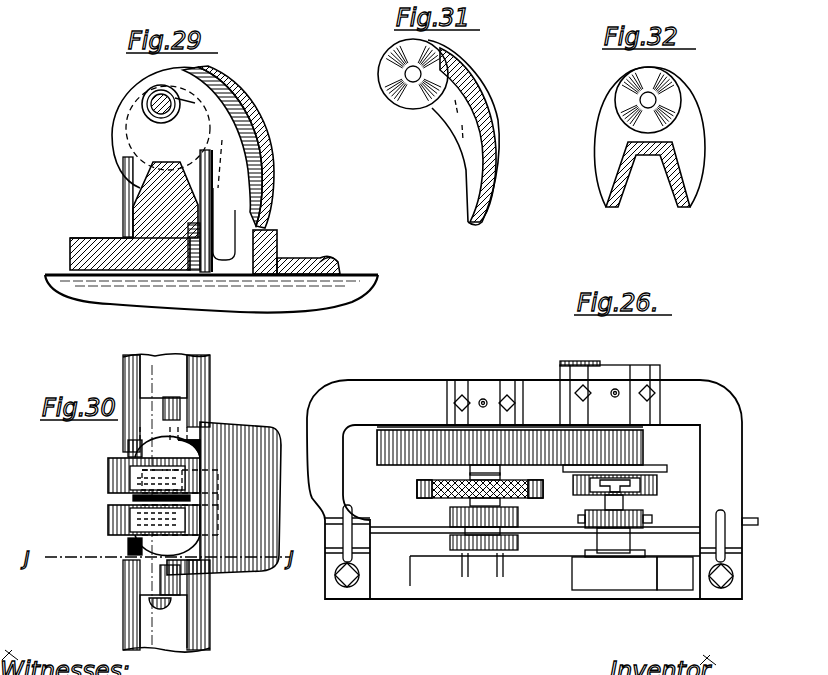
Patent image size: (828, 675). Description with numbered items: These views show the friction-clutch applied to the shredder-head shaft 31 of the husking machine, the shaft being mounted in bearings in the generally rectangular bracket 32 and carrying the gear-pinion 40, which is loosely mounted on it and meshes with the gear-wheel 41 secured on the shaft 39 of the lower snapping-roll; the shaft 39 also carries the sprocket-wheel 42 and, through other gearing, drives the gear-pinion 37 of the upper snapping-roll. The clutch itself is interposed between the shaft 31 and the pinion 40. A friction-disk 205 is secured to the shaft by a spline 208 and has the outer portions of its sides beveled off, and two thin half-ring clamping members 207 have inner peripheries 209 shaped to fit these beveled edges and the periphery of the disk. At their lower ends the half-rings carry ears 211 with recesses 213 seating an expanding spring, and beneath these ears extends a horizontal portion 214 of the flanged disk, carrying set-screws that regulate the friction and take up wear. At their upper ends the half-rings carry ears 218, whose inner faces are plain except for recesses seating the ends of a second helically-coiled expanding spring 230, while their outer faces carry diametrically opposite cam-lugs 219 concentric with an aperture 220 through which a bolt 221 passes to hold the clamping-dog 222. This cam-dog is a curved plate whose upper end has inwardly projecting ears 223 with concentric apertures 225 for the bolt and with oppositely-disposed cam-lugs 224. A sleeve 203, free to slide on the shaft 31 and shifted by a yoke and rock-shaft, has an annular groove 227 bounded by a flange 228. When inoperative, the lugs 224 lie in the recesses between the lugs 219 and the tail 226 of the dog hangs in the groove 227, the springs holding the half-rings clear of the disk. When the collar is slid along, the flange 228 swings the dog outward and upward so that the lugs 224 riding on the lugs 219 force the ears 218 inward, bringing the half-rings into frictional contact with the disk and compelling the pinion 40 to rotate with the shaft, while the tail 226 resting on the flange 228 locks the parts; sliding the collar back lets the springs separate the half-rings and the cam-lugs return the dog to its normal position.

In FIG. 29, the shaft 31 is at (200, 305).
In FIG. 26, the shaft 31 is at (615, 550).
In FIG. 26, the bracket 32 is at (384, 392).
In FIG. 26, the gear-pinion 37 is at (450, 518).
In FIG. 26, the shaft 39 is at (478, 410).
In FIG. 26, the gear-pinion 40 is at (632, 452).
In FIG. 26, the gear-wheel 41 is at (420, 448).
In FIG. 26, the sprocket-wheel 42 is at (417, 490).
In FIG. 29, the sleeve 203 is at (333, 264).
In FIG. 29, the friction-disk 205 is at (150, 210).
In FIG. 29, the clamping members 207 is at (128, 207).
In FIG. 30, the clamping members 207 is at (205, 386).
In FIG. 29, the spline 208 is at (87, 268).
In FIG. 29, the inner peripheries 209 is at (145, 175).
In FIG. 29, the ears 211 is at (110, 16).
In FIG. 30, the recesses 213 is at (200, 482).
In FIG. 31, the horizontal portion 214 is at (550, 8).
In FIG. 29, the ears 218 is at (195, 103).
In FIG. 32, the ears 218 is at (608, 118).
In FIG. 30, the ears 218 is at (108, 468).
In FIG. 32, the cam-lugs 219 is at (658, 80).
In FIG. 30, the cam-lugs 219 is at (200, 455).
In FIG. 32, the aperture 220 is at (660, 100).
In FIG. 29, the bolt 221 is at (197, 75).
In FIG. 30, the bolt 221 is at (163, 501).
In FIG. 29, the clamping-dog 222 is at (262, 128).
In FIG. 31, the clamping-dog 222 is at (437, 106).
In FIG. 31, the ears 223 is at (390, 64).
In FIG. 30, the ears 223 is at (160, 440).
In FIG. 30, the cam-lugs 224 is at (138, 497).
In FIG. 31, the apertures 225 is at (392, 90).
In FIG. 29, the tail 226 is at (258, 200).
In FIG. 31, the tail 226 is at (487, 196).
In FIG. 29, the annular groove 227 is at (290, 258).
In FIG. 29, the flange 228 is at (270, 235).
In FIG. 29, the expanding spring 230 is at (148, 96).
In FIG. 30, the expanding spring 230 is at (68, 517).